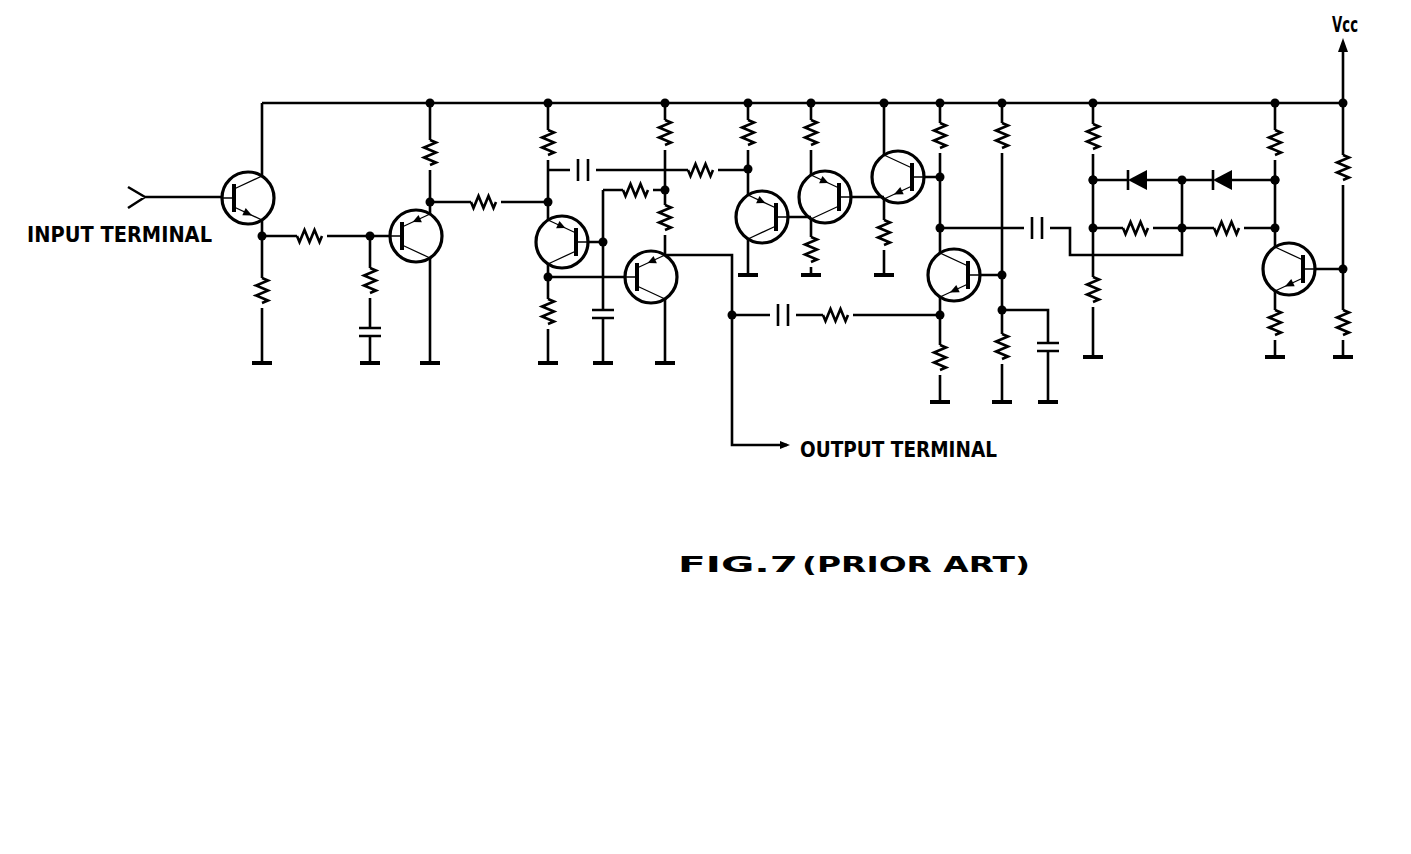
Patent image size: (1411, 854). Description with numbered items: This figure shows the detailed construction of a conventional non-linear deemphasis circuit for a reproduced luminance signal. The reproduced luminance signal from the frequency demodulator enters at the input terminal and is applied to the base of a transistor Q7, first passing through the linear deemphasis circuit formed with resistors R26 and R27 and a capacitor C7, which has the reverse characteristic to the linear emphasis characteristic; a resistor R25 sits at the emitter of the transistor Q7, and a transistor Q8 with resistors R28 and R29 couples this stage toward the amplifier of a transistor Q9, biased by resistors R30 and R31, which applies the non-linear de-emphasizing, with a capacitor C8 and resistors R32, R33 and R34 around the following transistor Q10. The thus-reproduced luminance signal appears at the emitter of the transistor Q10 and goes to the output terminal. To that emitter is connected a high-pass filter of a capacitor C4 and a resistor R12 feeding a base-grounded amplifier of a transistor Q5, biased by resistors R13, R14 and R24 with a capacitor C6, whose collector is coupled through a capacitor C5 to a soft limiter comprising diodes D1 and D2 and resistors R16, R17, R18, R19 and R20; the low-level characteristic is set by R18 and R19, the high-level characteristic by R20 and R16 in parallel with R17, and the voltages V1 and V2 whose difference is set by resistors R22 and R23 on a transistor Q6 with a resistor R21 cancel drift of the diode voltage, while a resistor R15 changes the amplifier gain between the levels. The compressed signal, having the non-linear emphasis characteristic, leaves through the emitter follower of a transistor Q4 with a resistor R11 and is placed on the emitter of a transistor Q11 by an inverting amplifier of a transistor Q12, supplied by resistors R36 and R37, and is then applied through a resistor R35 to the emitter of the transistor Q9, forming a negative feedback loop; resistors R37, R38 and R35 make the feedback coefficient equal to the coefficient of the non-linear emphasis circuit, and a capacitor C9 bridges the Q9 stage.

The transistor Q4 is at (912, 203).
The transistor Q5 is at (928, 289).
The transistor Q6 is at (1264, 283).
The transistor Q7 is at (238, 173).
The transistor Q8 is at (412, 262).
The transistor Q9 is at (536, 240).
The transistor Q10 is at (677, 282).
The transistor Q11 is at (766, 191).
The transistor Q12 is at (834, 172).
The resistor R11 is at (882, 229).
The resistor R12 is at (834, 325).
The resistor R13 is at (937, 355).
The resistor R14 is at (998, 350).
The resistor R15 is at (1000, 142).
The resistor R16 is at (1090, 142).
The resistor R17 is at (1107, 283).
The resistor R18 is at (1140, 223).
The resistor R19 is at (1226, 232).
The resistor R20 is at (1282, 147).
The resistor R21 is at (1272, 322).
The resistor R22 is at (1353, 172).
The resistor R23 is at (1349, 322).
The resistor R24 is at (937, 142).
The resistor R25 is at (257, 291).
The resistor R26 is at (315, 229).
The resistor R27 is at (363, 276).
The resistor R28 is at (425, 145).
The resistor R29 is at (484, 195).
The resistor R30 is at (543, 144).
The resistor R31 is at (543, 310).
The resistor R32 is at (660, 141).
The resistor R33 is at (640, 198).
The resistor R34 is at (672, 232).
The resistor R35 is at (703, 178).
The resistor R36 is at (743, 141).
The resistor R37 is at (808, 140).
The resistor R38 is at (808, 244).
The capacitor C4 is at (781, 327).
The capacitor C5 is at (1037, 217).
The capacitor C6 is at (1058, 350).
The capacitor C7 is at (362, 334).
The capacitor C8 is at (598, 322).
The capacitor C9 is at (585, 162).
The diode D1 is at (1141, 169).
The diode D2 is at (1225, 169).
The voltage V1 is at (1085, 185).
The voltage V2 is at (1287, 183).